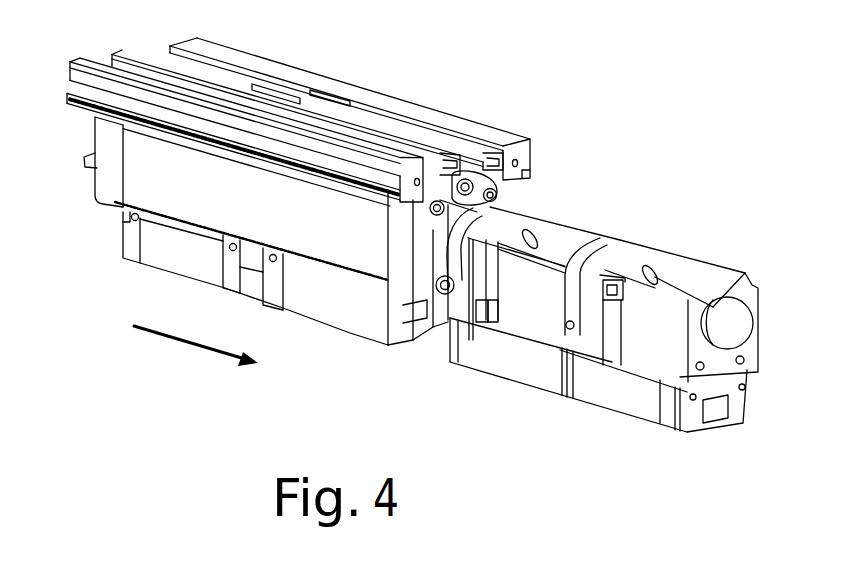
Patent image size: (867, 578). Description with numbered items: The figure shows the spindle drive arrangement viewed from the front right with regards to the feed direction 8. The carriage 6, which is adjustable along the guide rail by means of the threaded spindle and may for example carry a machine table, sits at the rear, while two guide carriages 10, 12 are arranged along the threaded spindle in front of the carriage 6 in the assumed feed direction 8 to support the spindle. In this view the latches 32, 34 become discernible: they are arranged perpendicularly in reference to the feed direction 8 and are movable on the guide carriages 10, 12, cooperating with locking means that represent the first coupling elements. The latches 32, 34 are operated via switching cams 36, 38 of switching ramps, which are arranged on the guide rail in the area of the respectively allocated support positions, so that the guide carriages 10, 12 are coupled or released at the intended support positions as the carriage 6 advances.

The carriage 6 is at (400, 89).
The feed direction 8 is at (155, 334).
The guide carriage 10 is at (572, 208).
The guide carriage 12 is at (688, 243).
The latch 32 is at (500, 316).
The latch 34 is at (611, 318).
The switching cam 36 is at (480, 315).
The switching cam 38 is at (622, 292).